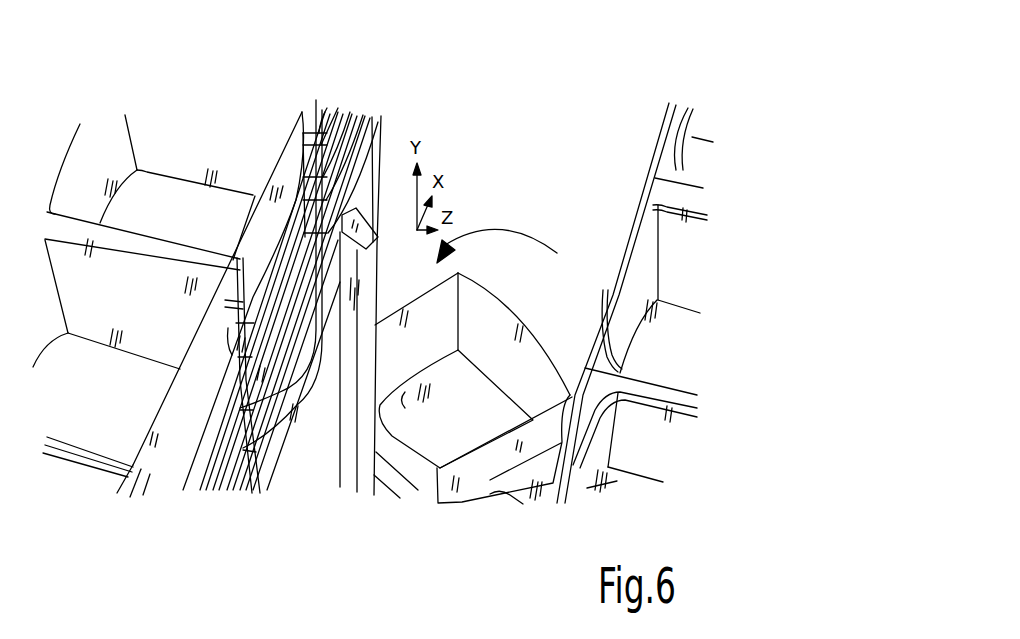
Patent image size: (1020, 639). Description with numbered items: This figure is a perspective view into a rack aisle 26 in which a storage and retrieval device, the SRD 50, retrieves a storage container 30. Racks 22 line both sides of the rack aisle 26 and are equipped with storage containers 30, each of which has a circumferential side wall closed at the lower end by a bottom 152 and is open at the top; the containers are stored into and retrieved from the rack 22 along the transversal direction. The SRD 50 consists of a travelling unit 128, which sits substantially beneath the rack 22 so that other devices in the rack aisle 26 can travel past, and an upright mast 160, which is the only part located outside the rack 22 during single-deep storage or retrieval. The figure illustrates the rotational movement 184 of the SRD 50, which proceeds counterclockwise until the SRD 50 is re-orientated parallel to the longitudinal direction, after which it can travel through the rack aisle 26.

The rack 22 is at (280, 160).
The rack aisle 26 is at (513, 153).
The storage container 30 is at (67, 150).
The SRD 50 is at (370, 500).
The travelling unit 128 is at (523, 503).
The bottom 152 is at (483, 433).
The mast 160 is at (340, 472).
The rotational movement 184 is at (497, 226).